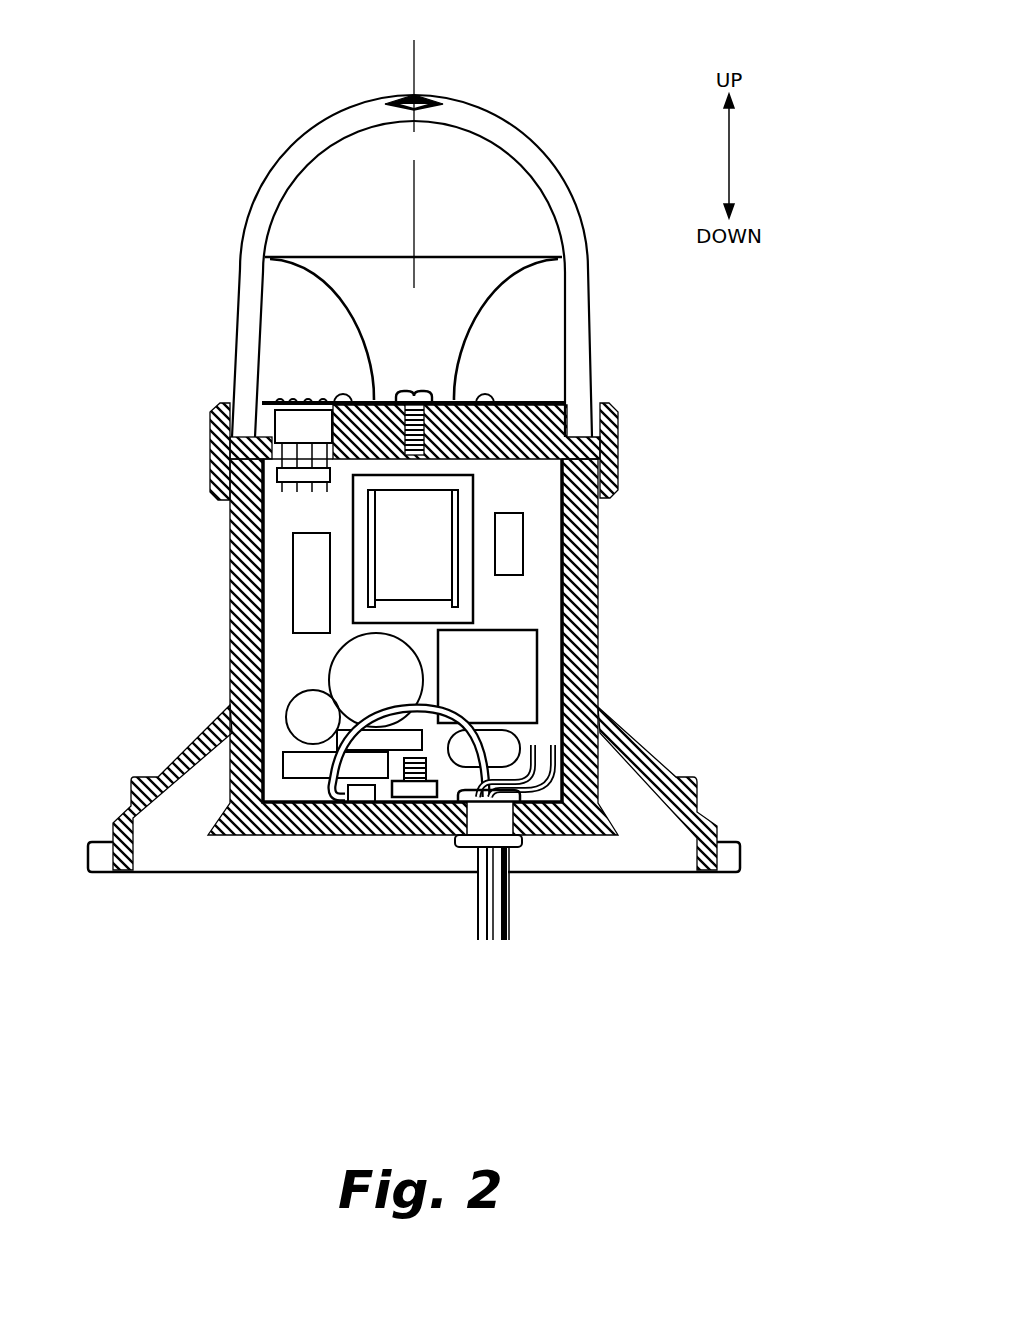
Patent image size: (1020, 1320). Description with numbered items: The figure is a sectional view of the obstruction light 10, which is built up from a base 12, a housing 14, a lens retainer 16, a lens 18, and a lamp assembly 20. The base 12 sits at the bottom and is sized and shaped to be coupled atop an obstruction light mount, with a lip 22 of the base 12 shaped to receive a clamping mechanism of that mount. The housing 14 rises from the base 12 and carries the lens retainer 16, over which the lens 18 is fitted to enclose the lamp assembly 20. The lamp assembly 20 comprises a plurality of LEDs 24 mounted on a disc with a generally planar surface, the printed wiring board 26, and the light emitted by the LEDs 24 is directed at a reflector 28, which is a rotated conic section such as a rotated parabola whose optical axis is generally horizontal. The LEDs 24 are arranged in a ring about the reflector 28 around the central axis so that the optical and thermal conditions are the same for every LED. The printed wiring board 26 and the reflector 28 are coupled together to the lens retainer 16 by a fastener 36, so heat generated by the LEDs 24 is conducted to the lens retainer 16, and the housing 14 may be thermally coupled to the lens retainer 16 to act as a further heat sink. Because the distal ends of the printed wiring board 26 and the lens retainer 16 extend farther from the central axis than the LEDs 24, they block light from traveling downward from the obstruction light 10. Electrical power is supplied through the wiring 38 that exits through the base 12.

The obstruction light 10 is at (268, 104).
The base 12 is at (742, 850).
The housing 14 is at (230, 598).
The lens retainer 16 is at (620, 447).
The lens 18 is at (235, 312).
The lamp assembly 20 is at (400, 232).
The lip 22 is at (680, 777).
The LEDs 24 is at (340, 394).
The printed wiring board 26 is at (537, 398).
The reflector 28 is at (498, 257).
The fastener 36 is at (417, 386).
The wiring 38 is at (508, 925).